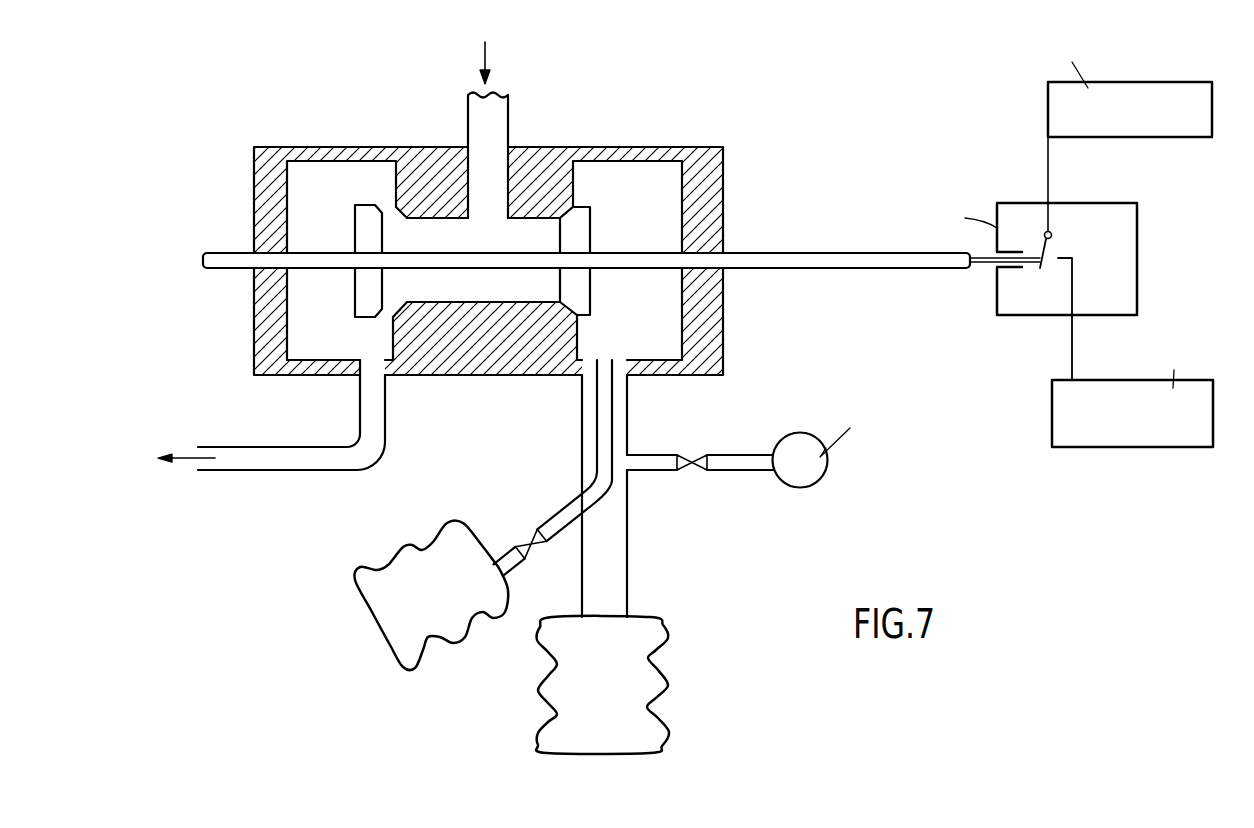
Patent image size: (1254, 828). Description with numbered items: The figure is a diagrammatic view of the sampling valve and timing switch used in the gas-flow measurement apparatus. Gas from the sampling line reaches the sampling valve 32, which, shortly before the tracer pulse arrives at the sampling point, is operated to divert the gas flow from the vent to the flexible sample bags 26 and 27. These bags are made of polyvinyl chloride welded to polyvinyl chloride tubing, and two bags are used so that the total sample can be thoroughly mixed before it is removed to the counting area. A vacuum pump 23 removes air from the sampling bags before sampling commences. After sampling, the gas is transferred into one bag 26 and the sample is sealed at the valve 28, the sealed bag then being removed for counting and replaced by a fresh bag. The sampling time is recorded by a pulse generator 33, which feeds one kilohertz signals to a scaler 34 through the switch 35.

The sampling valve 32 is at (607, 138).
The vacuum pump 23 is at (797, 449).
The valve 28 is at (533, 538).
The flexible sample bag 26 is at (402, 547).
The flexible sample bag 27 is at (660, 646).
The pulse generator 33 is at (1152, 125).
The switch 35 is at (1097, 270).
The scaler 34 is at (1150, 428).